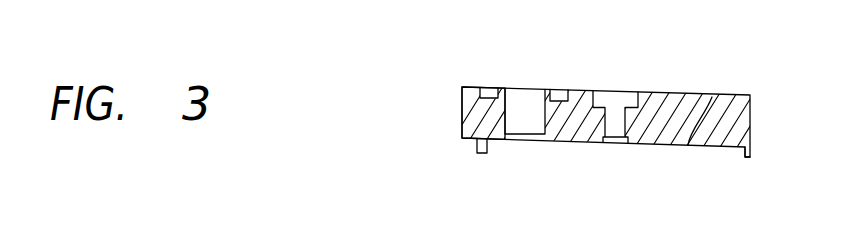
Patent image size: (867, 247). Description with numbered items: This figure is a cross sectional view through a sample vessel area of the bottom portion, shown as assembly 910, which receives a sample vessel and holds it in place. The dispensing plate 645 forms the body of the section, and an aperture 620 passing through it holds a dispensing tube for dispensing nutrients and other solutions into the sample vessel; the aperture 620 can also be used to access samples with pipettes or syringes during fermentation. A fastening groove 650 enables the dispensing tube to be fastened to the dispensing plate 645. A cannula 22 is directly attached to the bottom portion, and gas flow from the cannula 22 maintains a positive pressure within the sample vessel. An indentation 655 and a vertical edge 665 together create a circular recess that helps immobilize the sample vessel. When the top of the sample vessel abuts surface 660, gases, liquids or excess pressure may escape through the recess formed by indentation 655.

The retaining plate assembly 910 is at (389, 72).
The dispensing plate 645 is at (462, 117).
The fastening groove 650 is at (474, 88).
The aperture 620 is at (521, 97).
The cannula 22 is at (618, 115).
The surface 660 is at (712, 97).
The indentation 655 is at (477, 149).
The vertical edge 665 is at (747, 155).